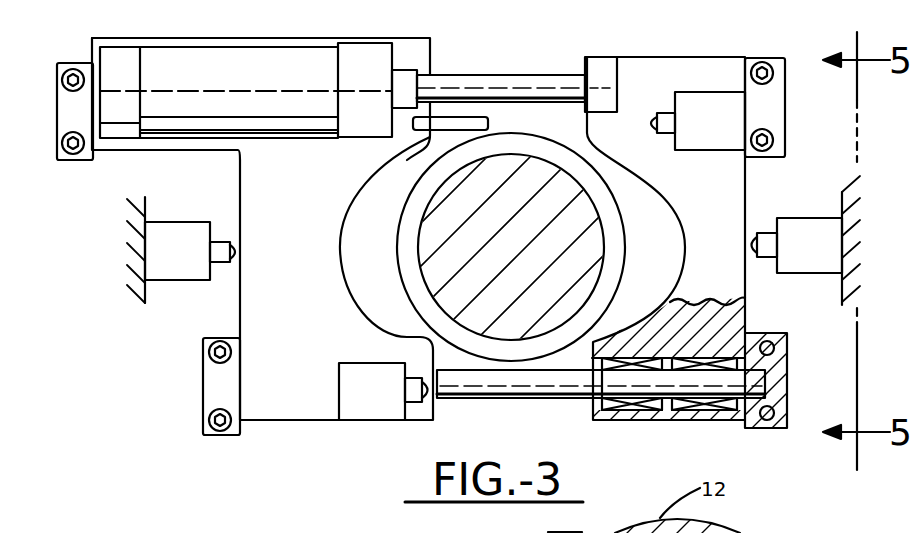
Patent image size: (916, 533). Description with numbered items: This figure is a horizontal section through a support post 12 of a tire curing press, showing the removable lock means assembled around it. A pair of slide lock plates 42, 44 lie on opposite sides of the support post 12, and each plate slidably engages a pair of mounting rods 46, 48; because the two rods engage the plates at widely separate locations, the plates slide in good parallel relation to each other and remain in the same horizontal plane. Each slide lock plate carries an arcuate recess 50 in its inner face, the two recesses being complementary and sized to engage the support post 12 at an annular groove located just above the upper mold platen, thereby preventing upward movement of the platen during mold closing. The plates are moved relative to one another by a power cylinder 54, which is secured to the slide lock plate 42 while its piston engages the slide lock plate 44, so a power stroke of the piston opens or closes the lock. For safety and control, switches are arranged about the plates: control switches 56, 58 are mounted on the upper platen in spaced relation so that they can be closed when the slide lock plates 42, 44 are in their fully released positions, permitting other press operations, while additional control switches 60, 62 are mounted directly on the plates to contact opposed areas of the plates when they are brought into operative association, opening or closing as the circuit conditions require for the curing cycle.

The support post 12 is at (452, 213).
The slide lock plate 42 is at (303, 312).
The slide lock plate 44 is at (707, 187).
The mounting rod 46 is at (538, 80).
The mounting rod 48 is at (507, 392).
The arcuate recess 50 is at (679, 225).
The power cylinder 54 is at (255, 102).
The control switch 56 is at (187, 228).
The control switch 58 is at (803, 220).
The control switch 60 is at (378, 367).
The control switch 62 is at (712, 103).